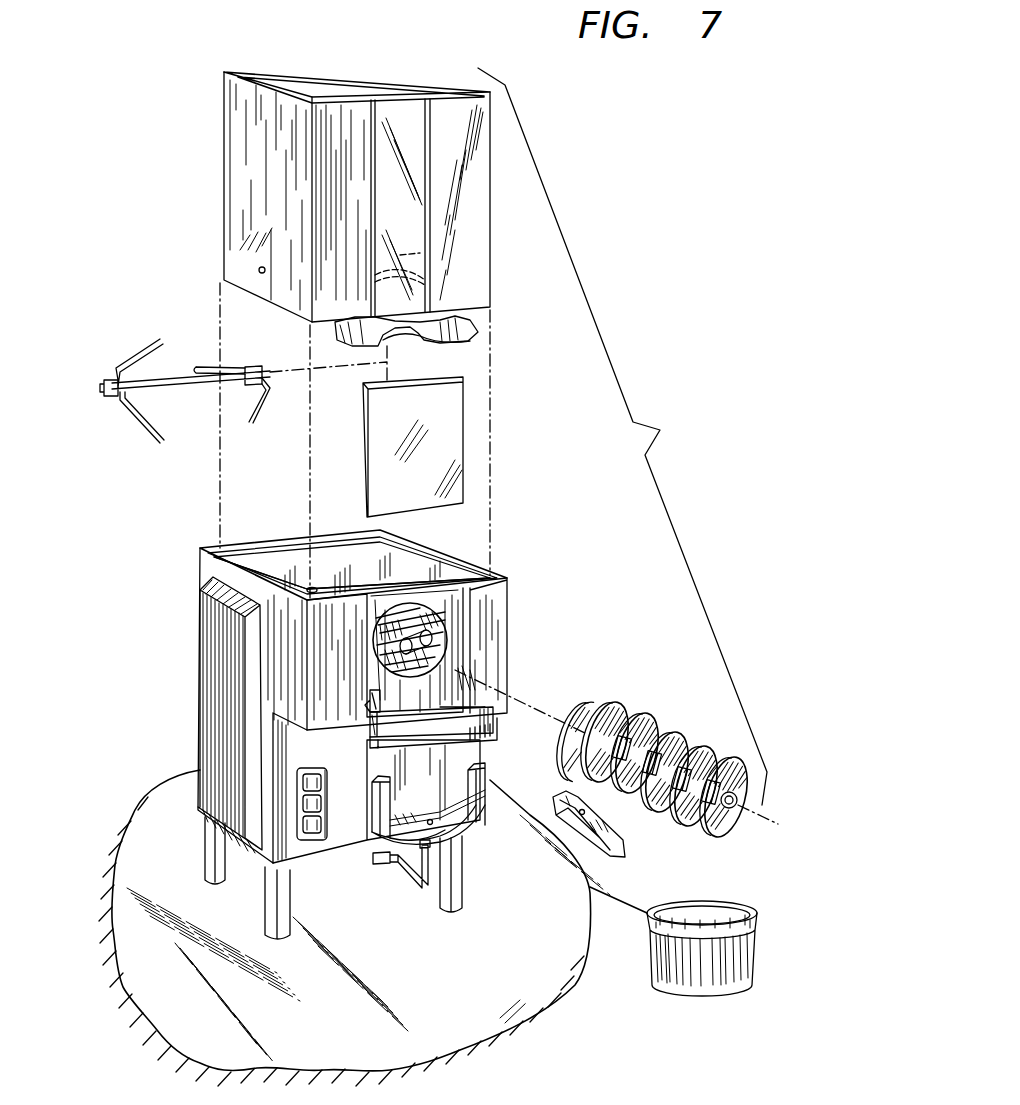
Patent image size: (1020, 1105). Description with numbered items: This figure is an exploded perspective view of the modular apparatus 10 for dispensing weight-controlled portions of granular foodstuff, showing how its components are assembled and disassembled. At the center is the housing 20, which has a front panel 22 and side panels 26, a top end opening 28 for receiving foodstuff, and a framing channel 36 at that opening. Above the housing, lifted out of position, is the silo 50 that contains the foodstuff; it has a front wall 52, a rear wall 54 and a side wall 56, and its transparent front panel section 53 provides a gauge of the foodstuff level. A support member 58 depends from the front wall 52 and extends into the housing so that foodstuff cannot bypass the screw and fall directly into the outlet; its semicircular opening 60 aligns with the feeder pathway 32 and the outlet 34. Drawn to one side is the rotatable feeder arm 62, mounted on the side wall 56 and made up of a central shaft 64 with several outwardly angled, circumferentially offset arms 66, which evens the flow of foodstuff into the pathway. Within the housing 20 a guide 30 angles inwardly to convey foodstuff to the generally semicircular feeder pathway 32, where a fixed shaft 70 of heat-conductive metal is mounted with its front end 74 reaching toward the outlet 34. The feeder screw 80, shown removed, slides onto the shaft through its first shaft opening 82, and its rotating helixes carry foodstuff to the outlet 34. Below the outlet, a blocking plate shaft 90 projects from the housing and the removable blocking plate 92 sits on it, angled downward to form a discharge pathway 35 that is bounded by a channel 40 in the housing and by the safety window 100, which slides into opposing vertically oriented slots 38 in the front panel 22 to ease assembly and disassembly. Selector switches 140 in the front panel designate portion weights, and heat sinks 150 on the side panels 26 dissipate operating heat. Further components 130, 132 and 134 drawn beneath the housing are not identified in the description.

The modular apparatus 10 is at (690, 436).
The housing 20 is at (360, 721).
The front panel 22 is at (508, 642).
The side panels 26 is at (383, 549).
The top end opening 28 is at (462, 556).
The guide 30 is at (482, 568).
The feeder pathway 32 is at (462, 660).
The outlet 34 is at (467, 700).
The discharge pathway 35 is at (400, 690).
The framing channel 36 is at (420, 548).
The vertically oriented slots 38 is at (465, 615).
The channel 40 is at (430, 714).
The silo 50 is at (349, 177).
The front wall 52 is at (472, 197).
The transparent front panel section 53 is at (408, 225).
The rear wall 54 is at (300, 74).
The side wall 56 is at (232, 203).
The support member 58 is at (438, 336).
The semicircular opening 60 is at (425, 348).
The rotatable feeder arm 62 is at (190, 387).
The central shaft 64 is at (170, 397).
The outwardly angled arms 66 is at (157, 446).
The fixed shaft 70 is at (380, 642).
The front end 74 is at (388, 617).
The feeder screw 80 is at (670, 768).
The first shaft opening 82 is at (734, 806).
The blocking plate shaft 90 is at (360, 738).
The blocking plate 92 is at (622, 847).
The safety window 100 is at (455, 405).
The water tube 130 is at (404, 882).
The legs 132 is at (460, 912).
The cup 134 is at (740, 962).
The selector switches 140 is at (330, 808).
The heat sinks 150 is at (222, 637).